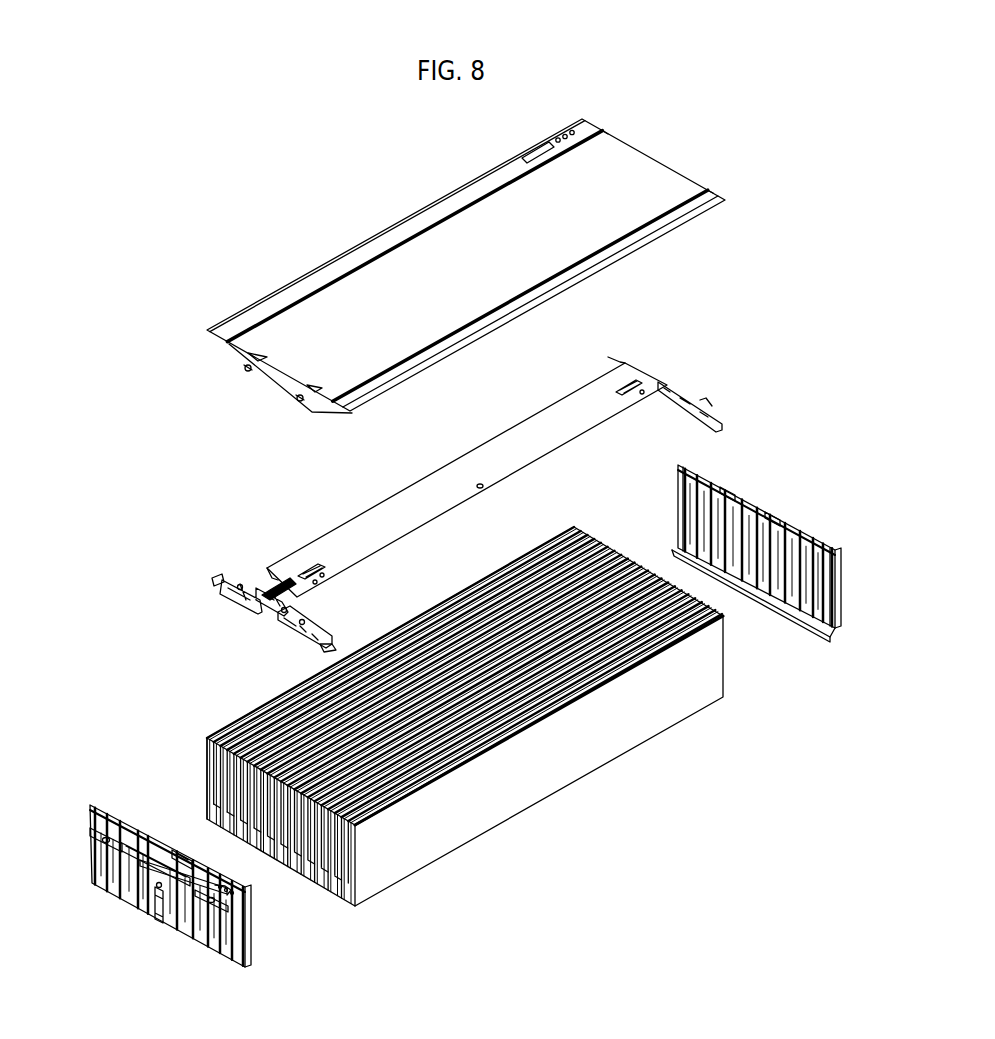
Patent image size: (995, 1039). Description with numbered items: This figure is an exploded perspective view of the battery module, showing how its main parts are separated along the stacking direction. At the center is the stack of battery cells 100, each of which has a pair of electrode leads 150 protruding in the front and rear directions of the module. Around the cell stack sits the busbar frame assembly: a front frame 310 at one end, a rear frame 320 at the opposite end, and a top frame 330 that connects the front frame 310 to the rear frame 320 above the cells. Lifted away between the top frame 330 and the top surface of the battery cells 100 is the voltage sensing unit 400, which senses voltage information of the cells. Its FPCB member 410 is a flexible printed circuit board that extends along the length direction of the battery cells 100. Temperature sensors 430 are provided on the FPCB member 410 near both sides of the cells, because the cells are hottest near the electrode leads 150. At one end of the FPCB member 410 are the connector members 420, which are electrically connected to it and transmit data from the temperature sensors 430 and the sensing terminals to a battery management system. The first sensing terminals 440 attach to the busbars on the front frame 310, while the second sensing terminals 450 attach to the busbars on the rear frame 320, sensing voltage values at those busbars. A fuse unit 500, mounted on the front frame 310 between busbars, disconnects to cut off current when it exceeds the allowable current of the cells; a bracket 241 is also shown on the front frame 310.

The battery cells 100 is at (442, 721).
The electrode leads 150 is at (325, 880).
The bracket 241 is at (186, 950).
The front frame 310 is at (156, 900).
The rear frame 320 is at (778, 497).
The top frame 330 is at (384, 212).
The voltage sensing unit 400 is at (467, 493).
The FPCB member 410 is at (361, 527).
The connector members 420 is at (260, 590).
The temperature sensors 430 is at (630, 380).
The first sensing terminals 440 is at (284, 634).
The second sensing terminals 450 is at (695, 409).
The fuse unit 500 is at (156, 926).